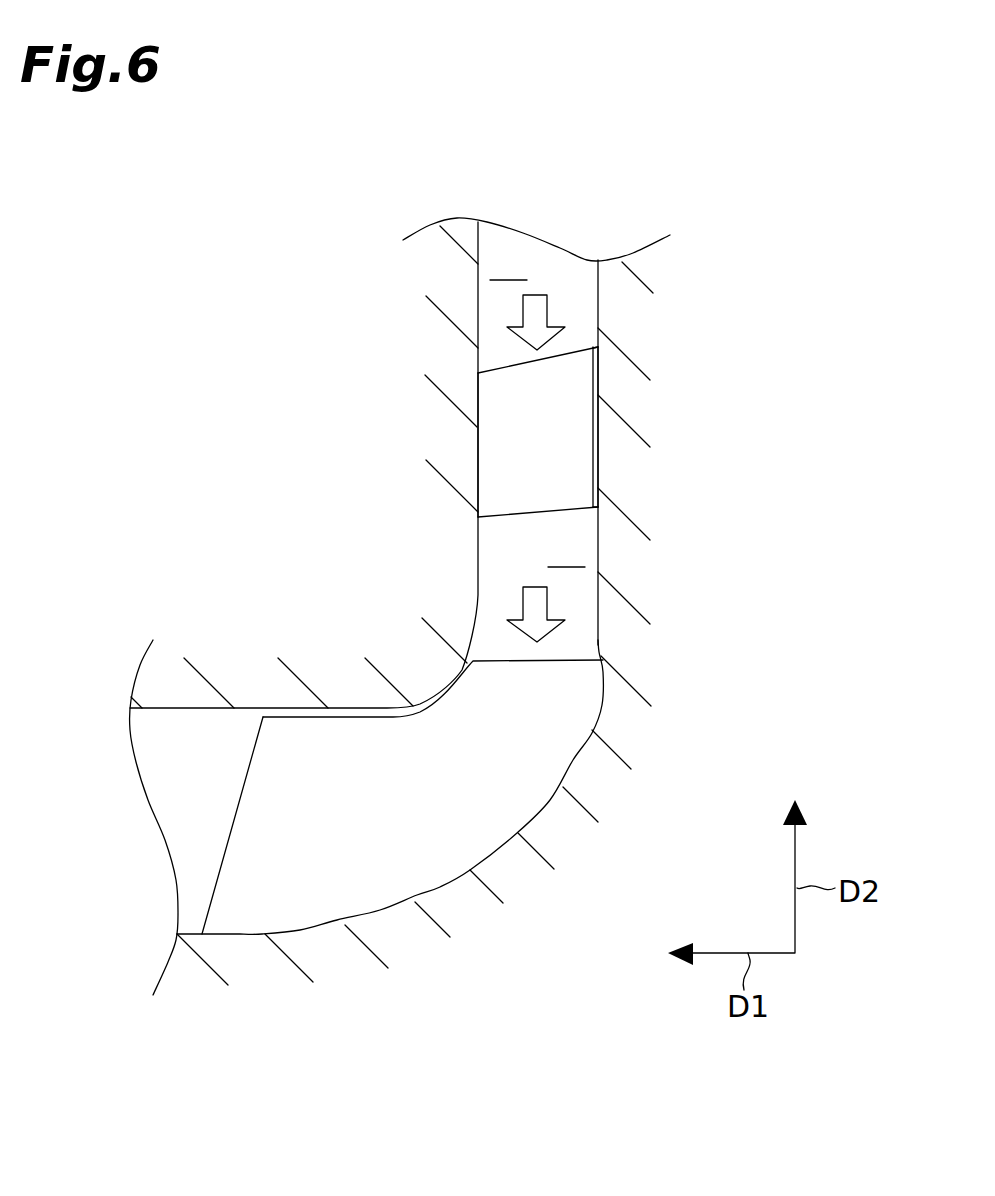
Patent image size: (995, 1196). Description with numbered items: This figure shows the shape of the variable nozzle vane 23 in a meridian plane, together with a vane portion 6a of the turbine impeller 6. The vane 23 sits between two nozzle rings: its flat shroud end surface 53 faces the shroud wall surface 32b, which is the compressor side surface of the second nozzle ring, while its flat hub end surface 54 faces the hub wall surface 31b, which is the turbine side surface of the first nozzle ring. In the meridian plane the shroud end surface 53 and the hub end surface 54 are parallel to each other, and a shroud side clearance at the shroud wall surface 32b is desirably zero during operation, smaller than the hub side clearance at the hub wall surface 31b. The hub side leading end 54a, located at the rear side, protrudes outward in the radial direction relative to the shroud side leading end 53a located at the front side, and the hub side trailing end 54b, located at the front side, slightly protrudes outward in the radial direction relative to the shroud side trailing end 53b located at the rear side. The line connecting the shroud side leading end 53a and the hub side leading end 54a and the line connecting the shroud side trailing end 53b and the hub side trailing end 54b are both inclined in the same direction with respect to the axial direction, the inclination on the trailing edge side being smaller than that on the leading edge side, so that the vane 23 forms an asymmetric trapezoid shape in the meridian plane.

The turbine impeller 6 is at (350, 787).
The vane portion 6a is at (268, 805).
The variable nozzle vane 23 is at (434, 465).
The hub wall surface 31b is at (595, 376).
The shroud wall surface 32b is at (478, 433).
The shroud end surface 53 is at (482, 449).
The shroud side leading end 53a is at (478, 373).
The shroud side trailing end 53b is at (478, 517).
The hub end surface 54 is at (659, 439).
The hub side leading end 54a is at (598, 346).
The hub side trailing end 54b is at (598, 511).